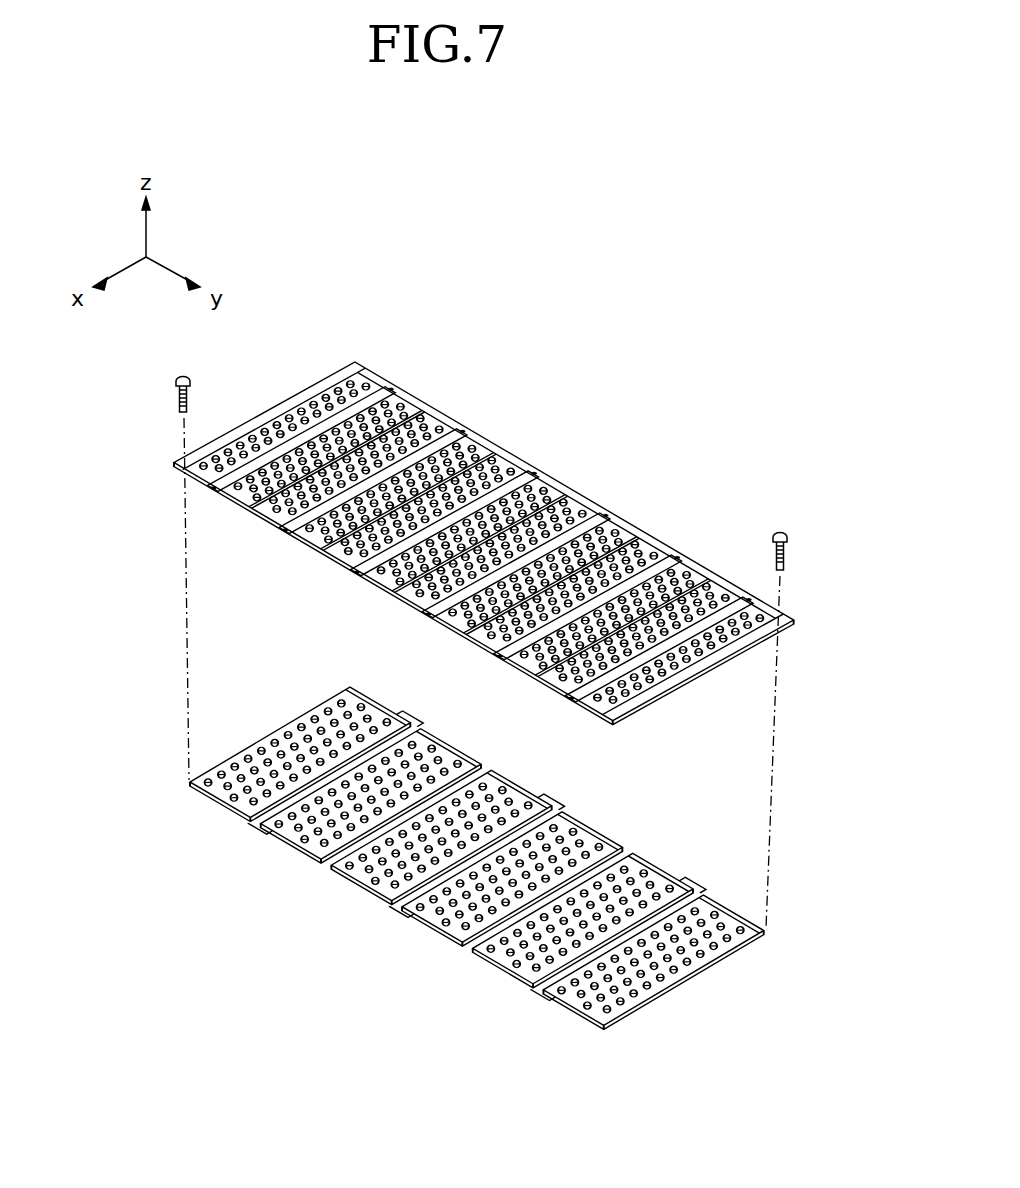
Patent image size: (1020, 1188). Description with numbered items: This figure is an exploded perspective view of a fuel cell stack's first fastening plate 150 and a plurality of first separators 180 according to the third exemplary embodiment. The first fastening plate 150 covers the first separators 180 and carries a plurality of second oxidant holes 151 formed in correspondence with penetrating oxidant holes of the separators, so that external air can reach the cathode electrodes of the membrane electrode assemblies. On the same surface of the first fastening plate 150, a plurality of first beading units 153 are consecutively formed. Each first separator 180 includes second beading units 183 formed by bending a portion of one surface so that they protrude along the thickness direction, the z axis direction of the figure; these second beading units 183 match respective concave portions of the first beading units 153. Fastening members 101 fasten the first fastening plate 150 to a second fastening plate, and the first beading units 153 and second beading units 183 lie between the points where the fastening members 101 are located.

The fastening member 101 is at (176, 391).
The first fastening plate 150 is at (483, 533).
The second oxidant hole 151 is at (423, 427).
The first beading unit 153 is at (530, 464).
The first separator 180 is at (419, 828).
The second beading unit 183 is at (235, 715).